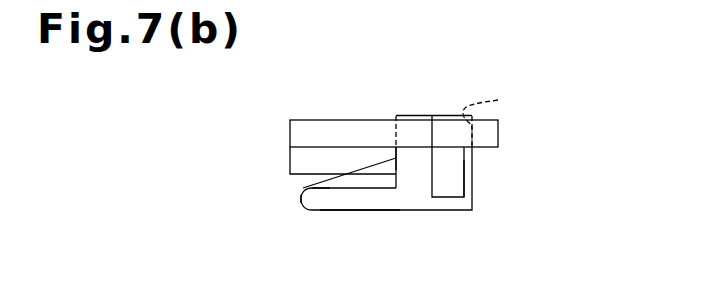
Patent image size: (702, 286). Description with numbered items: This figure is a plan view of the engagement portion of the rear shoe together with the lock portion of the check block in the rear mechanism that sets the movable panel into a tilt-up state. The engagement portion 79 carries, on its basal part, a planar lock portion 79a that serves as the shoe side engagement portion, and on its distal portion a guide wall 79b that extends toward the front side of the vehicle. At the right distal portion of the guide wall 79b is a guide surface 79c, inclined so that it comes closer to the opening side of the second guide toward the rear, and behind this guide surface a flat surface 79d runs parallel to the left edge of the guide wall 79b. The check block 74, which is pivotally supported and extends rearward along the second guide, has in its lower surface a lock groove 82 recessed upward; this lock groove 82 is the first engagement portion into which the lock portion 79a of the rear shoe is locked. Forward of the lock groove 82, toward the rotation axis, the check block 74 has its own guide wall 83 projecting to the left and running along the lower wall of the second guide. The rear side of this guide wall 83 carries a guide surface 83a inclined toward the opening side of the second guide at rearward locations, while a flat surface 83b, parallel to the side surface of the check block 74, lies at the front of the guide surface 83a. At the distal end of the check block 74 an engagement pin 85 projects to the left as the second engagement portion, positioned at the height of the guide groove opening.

The check block 74 is at (300, 126).
The engagement portion 79 is at (407, 200).
The lock portion 79a is at (418, 160).
The guide wall 79b is at (340, 200).
The guide surface 79c is at (312, 186).
The flat surface 79d is at (347, 170).
The lock groove 82 is at (497, 115).
The guide wall 83 is at (298, 152).
The guide surface 83a is at (373, 166).
The flat surface 83b is at (308, 205).
The engagement pin 85 is at (465, 180).